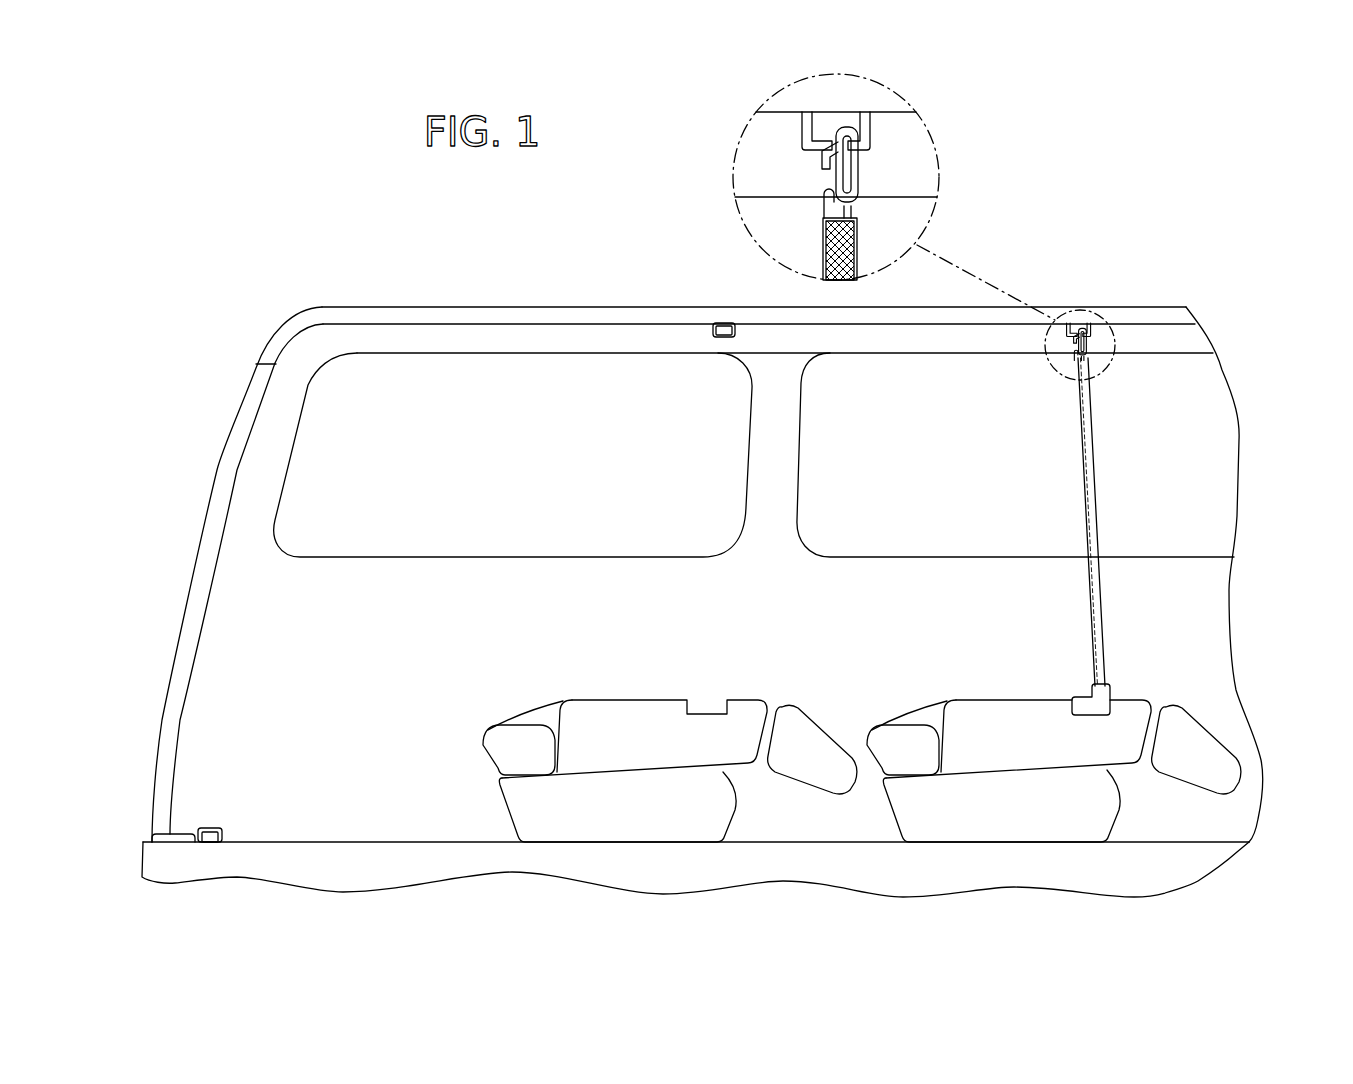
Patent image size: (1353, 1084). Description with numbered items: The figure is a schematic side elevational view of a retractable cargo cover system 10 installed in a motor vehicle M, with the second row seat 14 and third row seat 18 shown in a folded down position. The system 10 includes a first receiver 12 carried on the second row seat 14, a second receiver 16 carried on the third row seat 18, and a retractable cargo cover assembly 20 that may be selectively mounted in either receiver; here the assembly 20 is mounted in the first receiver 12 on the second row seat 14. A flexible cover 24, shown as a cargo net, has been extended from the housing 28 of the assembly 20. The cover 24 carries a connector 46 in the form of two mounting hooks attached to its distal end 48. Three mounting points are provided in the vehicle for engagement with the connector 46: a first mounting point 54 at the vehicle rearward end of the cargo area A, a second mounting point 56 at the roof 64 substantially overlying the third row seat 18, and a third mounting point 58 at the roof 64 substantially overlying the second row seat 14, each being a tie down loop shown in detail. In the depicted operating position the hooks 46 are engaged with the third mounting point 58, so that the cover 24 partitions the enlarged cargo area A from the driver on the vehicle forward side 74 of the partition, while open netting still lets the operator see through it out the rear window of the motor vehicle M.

The retractable cargo cover system 10 is at (446, 687).
The first receiver 12 is at (1083, 703).
The second row seat 14 is at (1023, 743).
The second receiver 16 is at (713, 714).
The third row seat 18 is at (627, 750).
The retractable cargo cover assembly 20 is at (1116, 673).
The flexible cover 24 is at (1095, 496).
The housing 28 is at (1113, 698).
The connector 46 is at (830, 130).
The distal end 48 is at (824, 214).
The first mounting point 54 is at (215, 827).
The second mounting point 56 is at (712, 332).
The third mounting point 58 is at (868, 138).
The roof 64 is at (893, 115).
The vehicle forward side 74 is at (1183, 393).
The motor vehicle M is at (393, 306).
The cargo area A is at (327, 703).